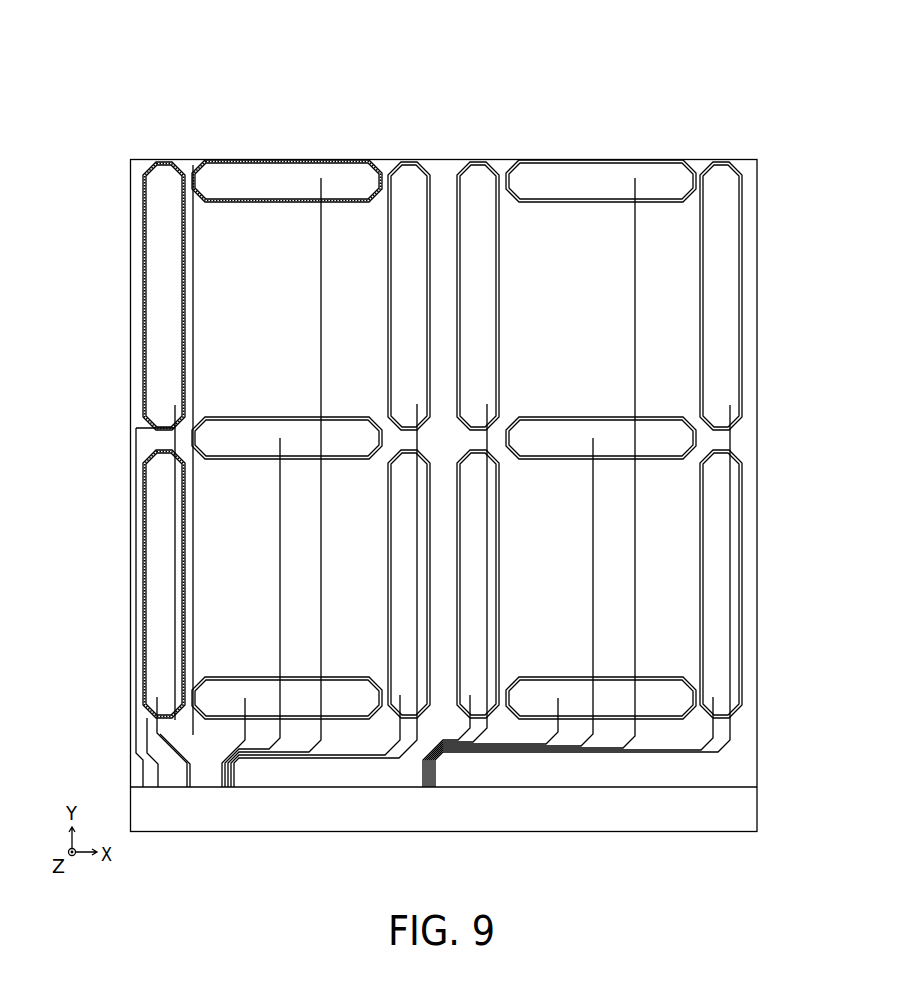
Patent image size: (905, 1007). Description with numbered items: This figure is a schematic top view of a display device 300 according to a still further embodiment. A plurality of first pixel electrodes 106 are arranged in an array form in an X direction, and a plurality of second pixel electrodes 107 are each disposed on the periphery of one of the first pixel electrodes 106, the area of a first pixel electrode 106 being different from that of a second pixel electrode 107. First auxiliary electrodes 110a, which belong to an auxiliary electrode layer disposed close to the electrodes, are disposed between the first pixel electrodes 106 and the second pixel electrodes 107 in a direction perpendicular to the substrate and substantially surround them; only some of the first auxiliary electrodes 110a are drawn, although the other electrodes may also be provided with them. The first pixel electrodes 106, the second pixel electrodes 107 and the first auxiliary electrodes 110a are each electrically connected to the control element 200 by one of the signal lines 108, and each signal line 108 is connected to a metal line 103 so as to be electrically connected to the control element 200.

The display device 300 is at (127, 36).
The control element 200 is at (287, 810).
The first auxiliary electrodes 110a is at (227, 160).
The second pixel electrodes 107 is at (167, 178).
The first pixel electrodes 106 is at (273, 326).
The signal lines 108 is at (321, 237).
The metal line 103 is at (158, 765).